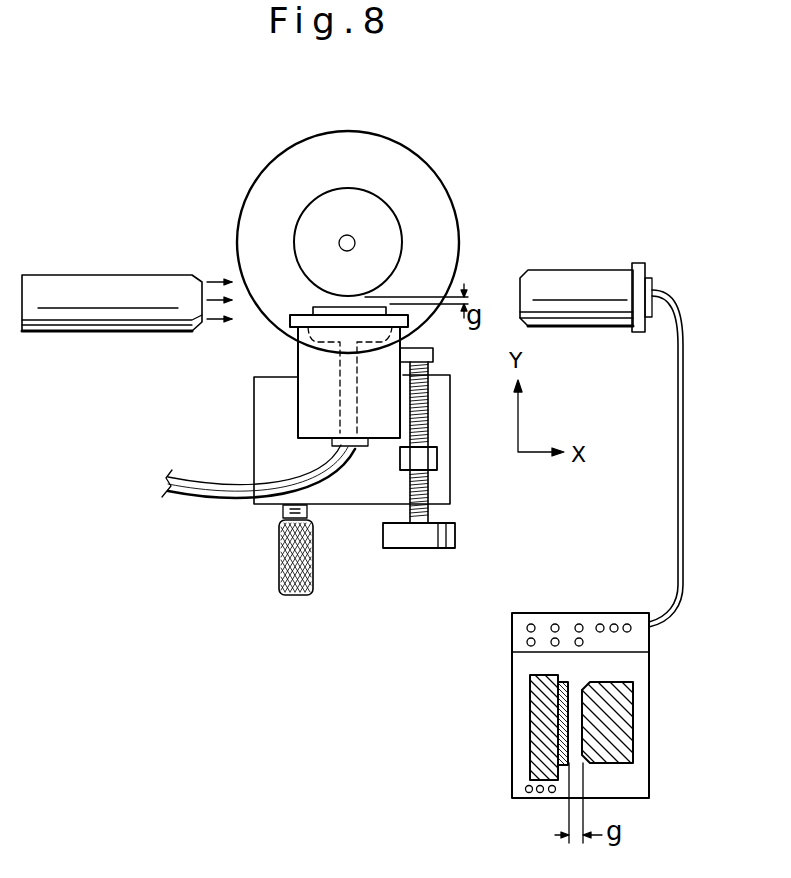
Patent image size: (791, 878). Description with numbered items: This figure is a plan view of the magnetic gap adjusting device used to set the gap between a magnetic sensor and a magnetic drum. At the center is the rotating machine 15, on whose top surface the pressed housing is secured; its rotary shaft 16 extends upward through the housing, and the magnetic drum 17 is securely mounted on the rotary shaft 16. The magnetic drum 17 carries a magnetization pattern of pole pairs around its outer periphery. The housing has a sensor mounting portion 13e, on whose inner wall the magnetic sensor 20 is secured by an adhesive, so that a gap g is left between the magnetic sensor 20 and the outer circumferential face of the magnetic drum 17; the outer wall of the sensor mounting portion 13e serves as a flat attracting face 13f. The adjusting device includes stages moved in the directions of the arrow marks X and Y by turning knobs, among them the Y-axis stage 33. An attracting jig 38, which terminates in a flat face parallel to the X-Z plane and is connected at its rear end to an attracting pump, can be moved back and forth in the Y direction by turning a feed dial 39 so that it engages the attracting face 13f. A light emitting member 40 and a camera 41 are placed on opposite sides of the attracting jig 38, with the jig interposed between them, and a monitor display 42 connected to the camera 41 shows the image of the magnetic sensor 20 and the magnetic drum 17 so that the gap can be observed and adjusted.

The rotating machine 15 is at (450, 198).
The rotary shaft 16 is at (353, 238).
The magnetic drum 17 is at (397, 257).
The magnetic sensor 20 is at (318, 308).
The sensor mounting portion 13e is at (293, 322).
The attracting face 13f is at (328, 332).
The attracting jig 38 is at (303, 410).
The Y-axis stage 33 is at (450, 483).
The feed dial 39 is at (430, 541).
The light emitting member 40 is at (103, 290).
The camera 41 is at (580, 283).
The monitor display 42 is at (512, 658).